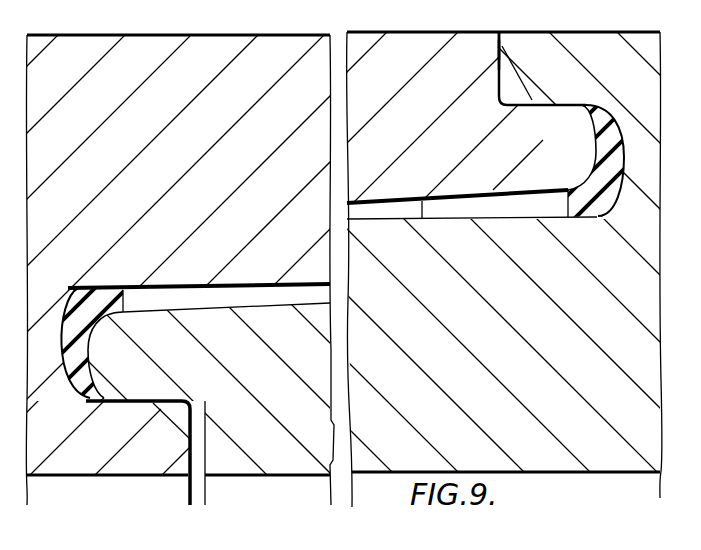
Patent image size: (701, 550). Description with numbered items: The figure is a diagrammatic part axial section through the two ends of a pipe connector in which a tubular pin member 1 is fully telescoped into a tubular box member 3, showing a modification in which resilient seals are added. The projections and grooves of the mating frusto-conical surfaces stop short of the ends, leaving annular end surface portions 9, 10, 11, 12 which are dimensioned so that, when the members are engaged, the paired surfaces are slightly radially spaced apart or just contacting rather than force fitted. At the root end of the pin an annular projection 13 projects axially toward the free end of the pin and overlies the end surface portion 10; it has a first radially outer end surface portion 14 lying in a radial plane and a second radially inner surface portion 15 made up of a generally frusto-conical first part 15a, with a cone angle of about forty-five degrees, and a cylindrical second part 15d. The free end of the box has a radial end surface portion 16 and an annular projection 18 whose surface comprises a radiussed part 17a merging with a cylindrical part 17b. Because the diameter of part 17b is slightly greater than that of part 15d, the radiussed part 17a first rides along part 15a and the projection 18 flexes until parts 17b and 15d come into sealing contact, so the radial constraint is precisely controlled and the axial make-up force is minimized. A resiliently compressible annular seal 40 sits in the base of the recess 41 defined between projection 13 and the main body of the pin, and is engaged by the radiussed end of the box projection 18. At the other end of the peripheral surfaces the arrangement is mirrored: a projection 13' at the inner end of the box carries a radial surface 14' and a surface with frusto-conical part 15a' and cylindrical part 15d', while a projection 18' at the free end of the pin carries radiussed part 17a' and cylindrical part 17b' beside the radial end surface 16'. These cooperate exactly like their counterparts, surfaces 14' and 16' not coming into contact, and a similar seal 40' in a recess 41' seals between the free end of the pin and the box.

The pin member 1 is at (289, 396).
The box member 3 is at (136, 187).
The annular end surface portion 9 is at (250, 306).
The annular end surface portion 10 is at (457, 220).
The annular end surface portion 11 is at (270, 286).
The annular end surface portion 12 is at (420, 200).
The annular projection 13 is at (479, 68).
The first radially outer end surface portion 14 is at (524, 53).
The second radially inner end surface portion 15 is at (533, 103).
The first frusto-conical surface part 15a is at (546, 73).
The second cylindrical surface part 15d is at (606, 97).
The first radially outer end surface portion 16 is at (458, 48).
The radiussed surface part 17a is at (560, 128).
The cylindrical surface part 17b is at (481, 117).
The annular projection 18 is at (457, 177).
The resiliently compressible annular seal 40 is at (402, 275).
The recess 41 is at (546, 222).
The resiliently compressible seal 40' is at (238, 275).
The recess 41' is at (97, 270).
The annular projection 18' is at (161, 281).
The radiussed surface part 17a' is at (129, 359).
The cylindrical surface part 17b' is at (152, 381).
The cylindrical surface part 15d' is at (94, 416).
The frusto-conical surface part 15a' is at (150, 427).
The annular projection 13' is at (318, 275).
The first radially outer end surface portion 14' is at (171, 457).
The first radially outer end surface portion 16' is at (235, 453).